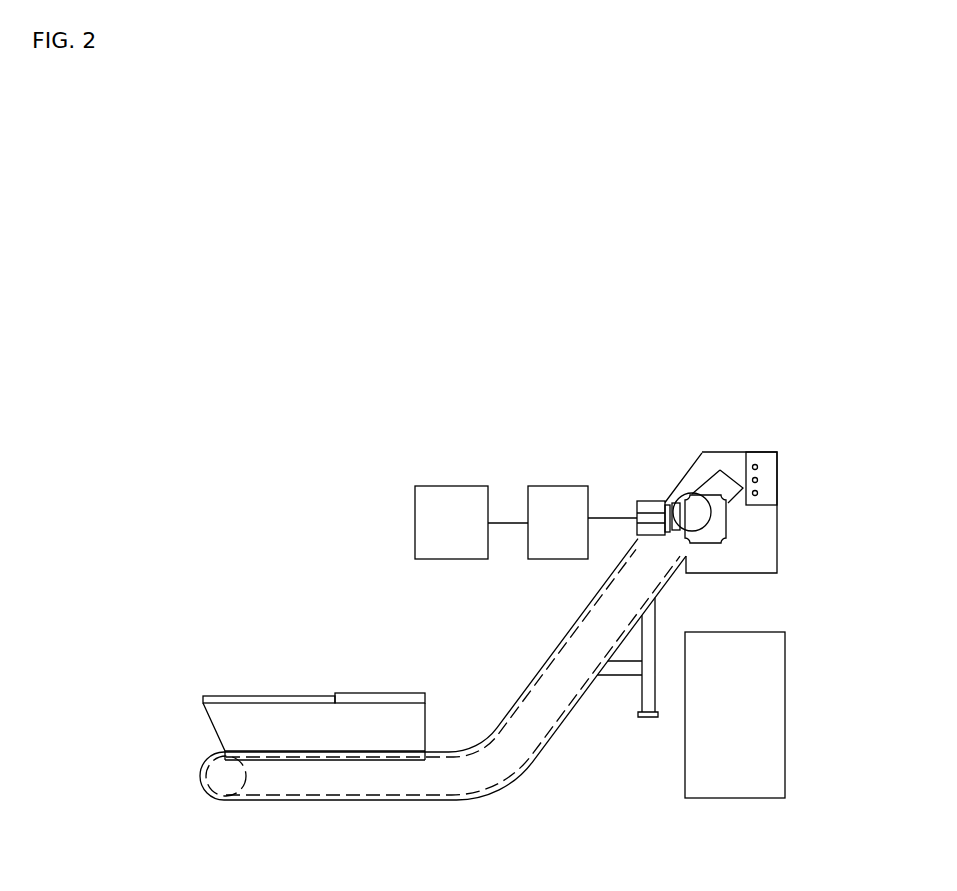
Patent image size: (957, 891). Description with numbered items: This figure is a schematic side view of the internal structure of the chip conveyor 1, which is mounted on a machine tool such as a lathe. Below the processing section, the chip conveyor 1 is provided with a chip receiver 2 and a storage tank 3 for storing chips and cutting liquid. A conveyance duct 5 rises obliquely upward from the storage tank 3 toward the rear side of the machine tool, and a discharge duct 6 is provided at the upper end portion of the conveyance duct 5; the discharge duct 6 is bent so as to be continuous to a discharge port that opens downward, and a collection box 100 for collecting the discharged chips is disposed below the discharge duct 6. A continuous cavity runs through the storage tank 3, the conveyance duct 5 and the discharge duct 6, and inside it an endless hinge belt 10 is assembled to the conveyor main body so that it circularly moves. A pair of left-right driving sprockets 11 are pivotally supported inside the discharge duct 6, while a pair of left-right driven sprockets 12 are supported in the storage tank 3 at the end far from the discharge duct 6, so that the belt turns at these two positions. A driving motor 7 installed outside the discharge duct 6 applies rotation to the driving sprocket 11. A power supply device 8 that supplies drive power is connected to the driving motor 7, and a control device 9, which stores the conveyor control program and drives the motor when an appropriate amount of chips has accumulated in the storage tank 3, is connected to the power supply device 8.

The chip conveyor 1 is at (410, 359).
The chip receiver 2 is at (300, 718).
The storage tank 3 is at (355, 778).
The conveyance duct 5 is at (553, 672).
The discharge duct 6 is at (732, 458).
The driving motor 7 is at (653, 515).
The power supply device 8 is at (563, 503).
The control device 9 is at (447, 503).
The hinge belt 10 is at (533, 760).
The driving sprocket 11 is at (690, 492).
The driven sprocket 12 is at (223, 800).
The collection box 100 is at (734, 770).